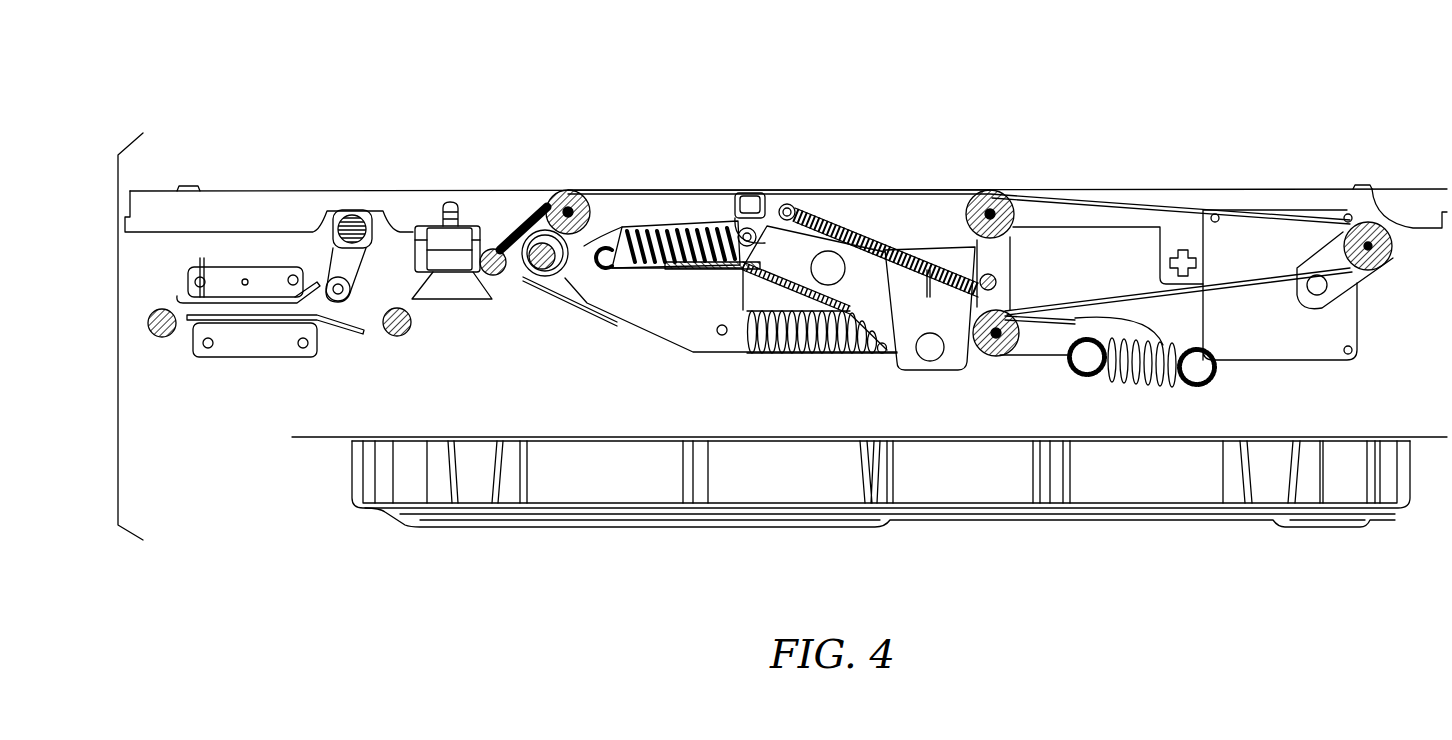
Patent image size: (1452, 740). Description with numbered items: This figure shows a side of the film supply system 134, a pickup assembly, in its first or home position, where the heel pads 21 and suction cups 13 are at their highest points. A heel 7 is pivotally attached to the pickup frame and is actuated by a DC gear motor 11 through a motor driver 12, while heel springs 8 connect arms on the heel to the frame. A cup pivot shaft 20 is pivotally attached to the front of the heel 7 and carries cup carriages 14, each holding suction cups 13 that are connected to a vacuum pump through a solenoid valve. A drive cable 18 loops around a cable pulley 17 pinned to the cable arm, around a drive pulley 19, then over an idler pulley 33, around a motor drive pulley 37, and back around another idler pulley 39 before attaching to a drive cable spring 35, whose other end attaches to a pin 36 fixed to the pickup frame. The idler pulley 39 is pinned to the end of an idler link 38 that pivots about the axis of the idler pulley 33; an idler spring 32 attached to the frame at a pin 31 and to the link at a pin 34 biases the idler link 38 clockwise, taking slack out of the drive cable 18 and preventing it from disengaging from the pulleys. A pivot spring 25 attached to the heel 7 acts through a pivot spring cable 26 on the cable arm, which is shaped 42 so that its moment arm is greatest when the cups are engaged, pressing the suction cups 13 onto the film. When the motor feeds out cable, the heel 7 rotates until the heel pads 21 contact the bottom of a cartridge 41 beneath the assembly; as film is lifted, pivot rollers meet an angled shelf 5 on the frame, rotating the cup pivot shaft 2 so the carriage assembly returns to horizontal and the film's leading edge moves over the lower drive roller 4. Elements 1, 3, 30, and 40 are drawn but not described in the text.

The film supply system 134 is at (640, 88).
The mounting post 1 is at (162, 310).
The cup pivot shaft 2 is at (230, 272).
The bracket 3 is at (255, 350).
The lower drive roller 4 is at (397, 337).
The angled shelf 5 is at (613, 317).
The heel 7 is at (783, 256).
The heel springs 8 is at (803, 355).
The DC gear motor 11 is at (1313, 345).
The motor driver 12 is at (1340, 292).
The suction cups 13 is at (443, 295).
The cup carriages 14 is at (440, 252).
The cable pulley 17 is at (510, 278).
The drive cable 18 is at (628, 191).
The drive pulley 19 is at (557, 190).
The cup pivot shaft 20 is at (556, 292).
The heel pads 21 is at (588, 304).
The pivot spring 25 is at (667, 272).
The pivot spring cable 26 is at (600, 282).
The pivot bracket 30 is at (743, 228).
The pin 31 is at (782, 202).
The idler spring 32 is at (848, 217).
The idler pulley 33 is at (1010, 194).
The pin 34 is at (1000, 273).
The drive cable spring 35 is at (1123, 328).
The pin 36 is at (1213, 362).
The motor drive pulley 37 is at (1372, 190).
The idler link 38 is at (980, 253).
The idler pulley 39 is at (997, 362).
The pivot arm 40 is at (932, 352).
The cartridge 41 is at (980, 478).
The shape of cable arm 42 is at (584, 243).